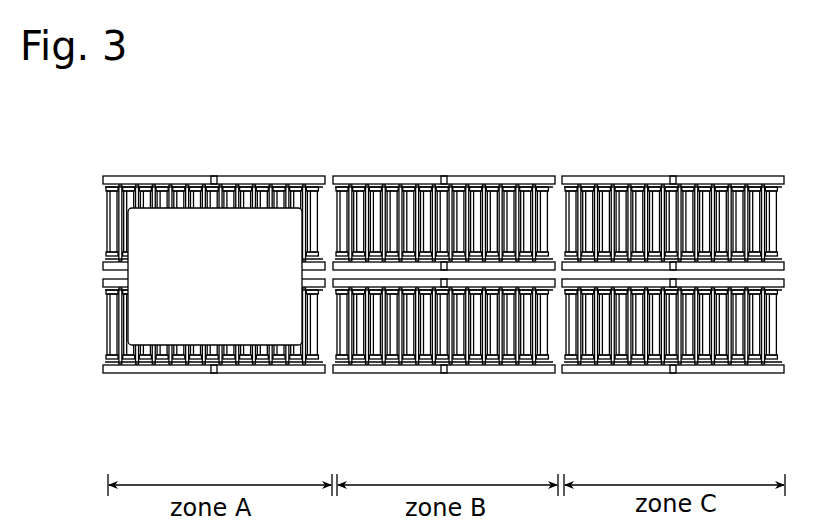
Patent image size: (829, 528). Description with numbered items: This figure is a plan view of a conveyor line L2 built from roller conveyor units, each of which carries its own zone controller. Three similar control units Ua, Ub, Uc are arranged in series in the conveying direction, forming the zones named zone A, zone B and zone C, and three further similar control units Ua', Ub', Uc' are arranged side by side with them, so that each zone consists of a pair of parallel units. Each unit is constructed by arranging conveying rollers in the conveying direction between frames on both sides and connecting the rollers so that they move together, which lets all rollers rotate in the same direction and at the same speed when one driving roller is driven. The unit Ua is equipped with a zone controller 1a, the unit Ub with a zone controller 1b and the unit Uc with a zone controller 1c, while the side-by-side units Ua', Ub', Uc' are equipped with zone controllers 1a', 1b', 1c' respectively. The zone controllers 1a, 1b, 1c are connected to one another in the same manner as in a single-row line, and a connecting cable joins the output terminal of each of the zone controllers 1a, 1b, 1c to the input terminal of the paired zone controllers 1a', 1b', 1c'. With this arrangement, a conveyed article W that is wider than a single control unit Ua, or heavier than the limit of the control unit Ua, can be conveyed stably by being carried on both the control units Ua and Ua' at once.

The conveyor line L2 is at (720, 98).
The control unit Ua is at (214, 196).
The zone controller 1a is at (214, 162).
The control unit Ua' is at (214, 351).
The zone controller 1a' is at (214, 351).
The control unit Ub is at (444, 196).
The zone controller 1b is at (444, 161).
The control unit Ub' is at (444, 352).
The zone controller 1b' is at (444, 350).
The control unit Uc is at (673, 196).
The zone controller 1c is at (673, 161).
The control unit Uc' is at (674, 352).
The zone controller 1c' is at (674, 350).
The substrate (wafer) W is at (145, 325).